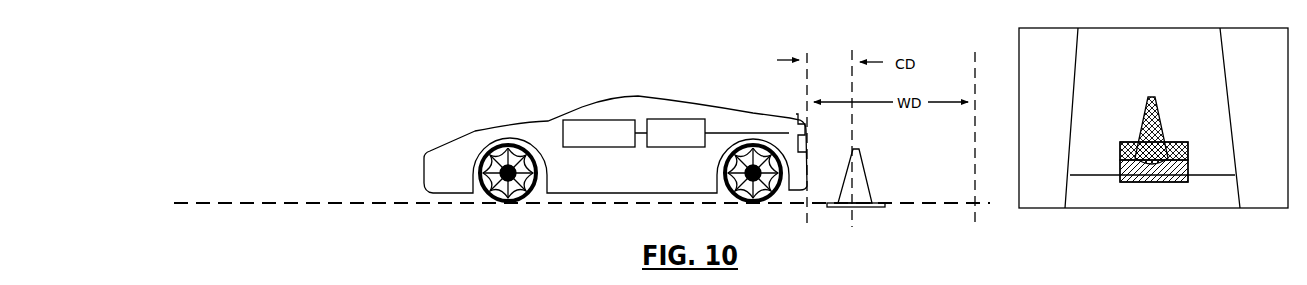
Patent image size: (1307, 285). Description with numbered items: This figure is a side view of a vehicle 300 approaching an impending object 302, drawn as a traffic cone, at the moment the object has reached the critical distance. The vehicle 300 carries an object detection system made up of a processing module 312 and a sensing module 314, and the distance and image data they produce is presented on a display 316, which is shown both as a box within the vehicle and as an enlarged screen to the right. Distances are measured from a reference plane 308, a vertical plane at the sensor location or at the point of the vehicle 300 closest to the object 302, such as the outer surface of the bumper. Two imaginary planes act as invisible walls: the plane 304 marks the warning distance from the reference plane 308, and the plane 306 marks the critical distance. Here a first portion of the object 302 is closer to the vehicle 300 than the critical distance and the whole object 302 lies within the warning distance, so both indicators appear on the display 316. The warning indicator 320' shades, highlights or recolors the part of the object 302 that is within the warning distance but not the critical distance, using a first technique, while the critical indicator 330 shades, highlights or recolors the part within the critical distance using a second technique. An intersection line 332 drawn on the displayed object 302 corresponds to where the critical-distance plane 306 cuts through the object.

The vehicle 300 is at (627, 97).
The display 316 is at (592, 119).
The processing module 312 is at (694, 119).
The sensing module 314 is at (797, 114).
The reference plane 308 is at (808, 58).
The imaginary plane for warning distance 304 is at (974, 52).
The imaginary plane for critical distance 306 is at (852, 124).
The impending object 302 is at (868, 178).
The warning indicator 320' is at (1129, 112).
The intersection line 332 is at (1168, 142).
The critical indicator 330 is at (1155, 183).